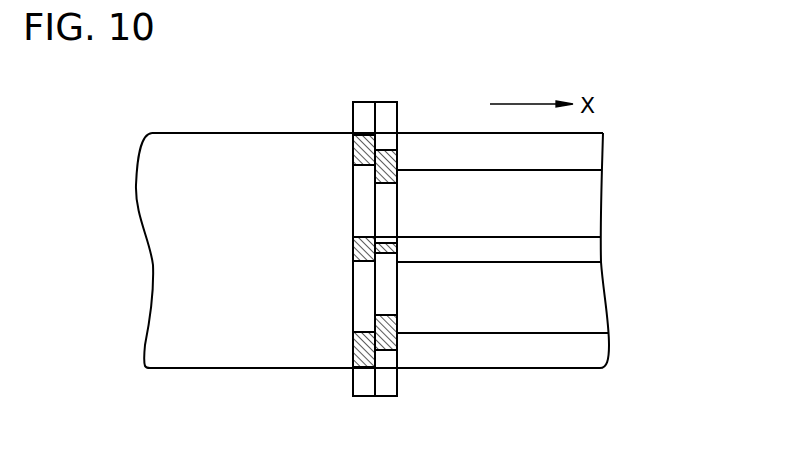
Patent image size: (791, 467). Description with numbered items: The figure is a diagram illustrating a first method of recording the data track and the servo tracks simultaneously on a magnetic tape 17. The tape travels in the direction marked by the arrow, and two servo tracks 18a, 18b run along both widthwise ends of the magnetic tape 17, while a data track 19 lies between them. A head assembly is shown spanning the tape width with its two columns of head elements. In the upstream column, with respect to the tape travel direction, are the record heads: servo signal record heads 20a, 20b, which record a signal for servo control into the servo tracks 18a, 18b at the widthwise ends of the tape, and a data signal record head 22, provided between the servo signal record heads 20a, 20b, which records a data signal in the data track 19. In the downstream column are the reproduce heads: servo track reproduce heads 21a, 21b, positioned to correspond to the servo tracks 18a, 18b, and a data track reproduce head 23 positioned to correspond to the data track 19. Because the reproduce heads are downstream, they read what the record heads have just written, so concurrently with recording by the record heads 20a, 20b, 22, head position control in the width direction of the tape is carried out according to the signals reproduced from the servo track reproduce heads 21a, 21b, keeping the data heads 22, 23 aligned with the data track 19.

The magnetic tape 17 is at (142, 172).
The servo track 18a is at (584, 143).
The servo track 18b is at (577, 355).
The data track 19 is at (590, 255).
The servo signal record head 20a is at (353, 153).
The servo signal record head 20b is at (352, 355).
The servo track reproduce head 21a is at (397, 148).
The servo track reproduce head 21b is at (397, 343).
The data signal record head 22 is at (353, 262).
The data track reproduce head 23 is at (398, 257).